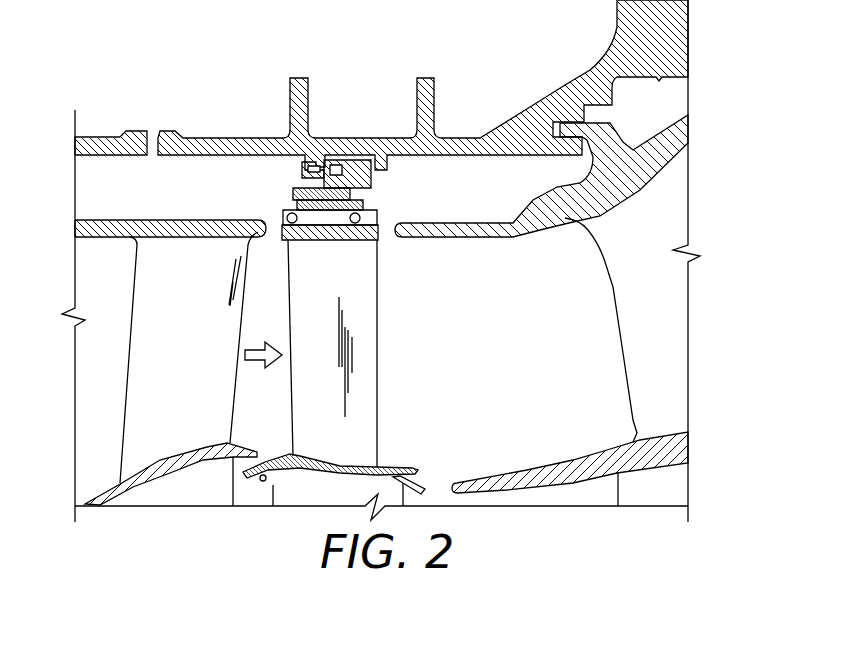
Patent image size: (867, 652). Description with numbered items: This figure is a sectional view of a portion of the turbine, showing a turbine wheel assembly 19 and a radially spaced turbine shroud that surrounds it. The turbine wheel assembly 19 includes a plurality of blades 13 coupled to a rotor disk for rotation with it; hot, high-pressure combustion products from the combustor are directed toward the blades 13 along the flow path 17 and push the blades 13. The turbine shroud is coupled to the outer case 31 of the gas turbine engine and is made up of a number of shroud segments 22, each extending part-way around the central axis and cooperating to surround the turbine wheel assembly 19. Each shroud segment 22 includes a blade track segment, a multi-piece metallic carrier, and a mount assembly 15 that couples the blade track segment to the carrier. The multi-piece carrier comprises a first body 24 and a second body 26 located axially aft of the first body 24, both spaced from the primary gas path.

The blades 13 is at (378, 382).
The mount assembly 15 is at (292, 130).
The flow path 17 is at (253, 362).
The turbine wheel assembly 19 is at (412, 453).
The shroud segment 22 is at (402, 185).
The first body 24 is at (312, 157).
The second body 26 is at (363, 157).
The outer case 31 is at (217, 147).